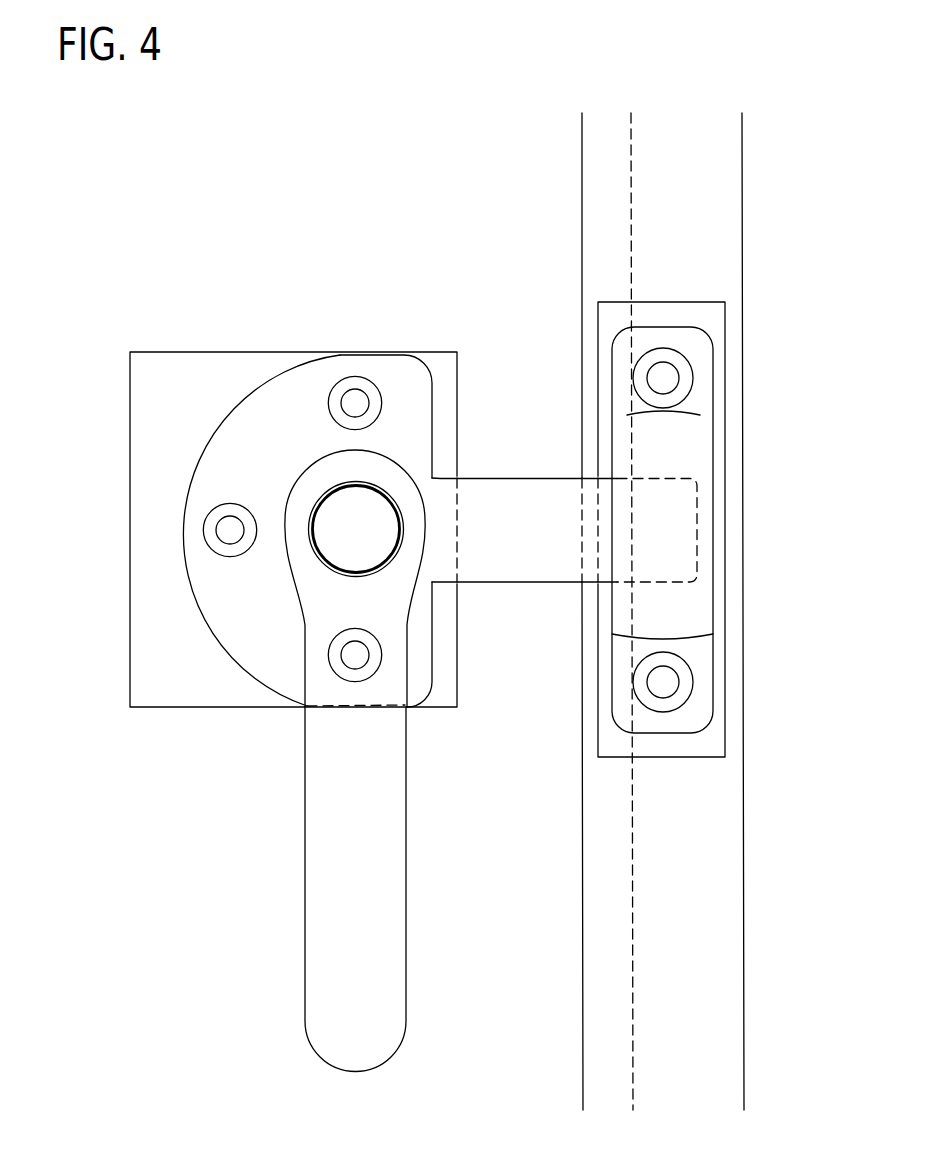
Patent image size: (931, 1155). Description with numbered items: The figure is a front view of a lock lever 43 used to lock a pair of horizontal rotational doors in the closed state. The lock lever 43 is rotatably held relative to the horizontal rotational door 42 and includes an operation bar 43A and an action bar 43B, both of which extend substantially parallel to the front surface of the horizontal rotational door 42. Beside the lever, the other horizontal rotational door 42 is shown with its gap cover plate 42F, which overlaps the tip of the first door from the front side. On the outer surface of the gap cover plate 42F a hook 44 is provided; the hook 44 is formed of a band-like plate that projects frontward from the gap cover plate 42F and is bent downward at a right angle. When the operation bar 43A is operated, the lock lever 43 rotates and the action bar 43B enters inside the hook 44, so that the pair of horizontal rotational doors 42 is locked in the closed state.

The horizontal rotational door 42 is at (679, 578).
The gap cover plate 42F is at (710, 205).
The lock lever 43 is at (489, 682).
The operation bar 43A is at (390, 760).
The action bar 43B is at (493, 492).
The hook 44 is at (713, 445).